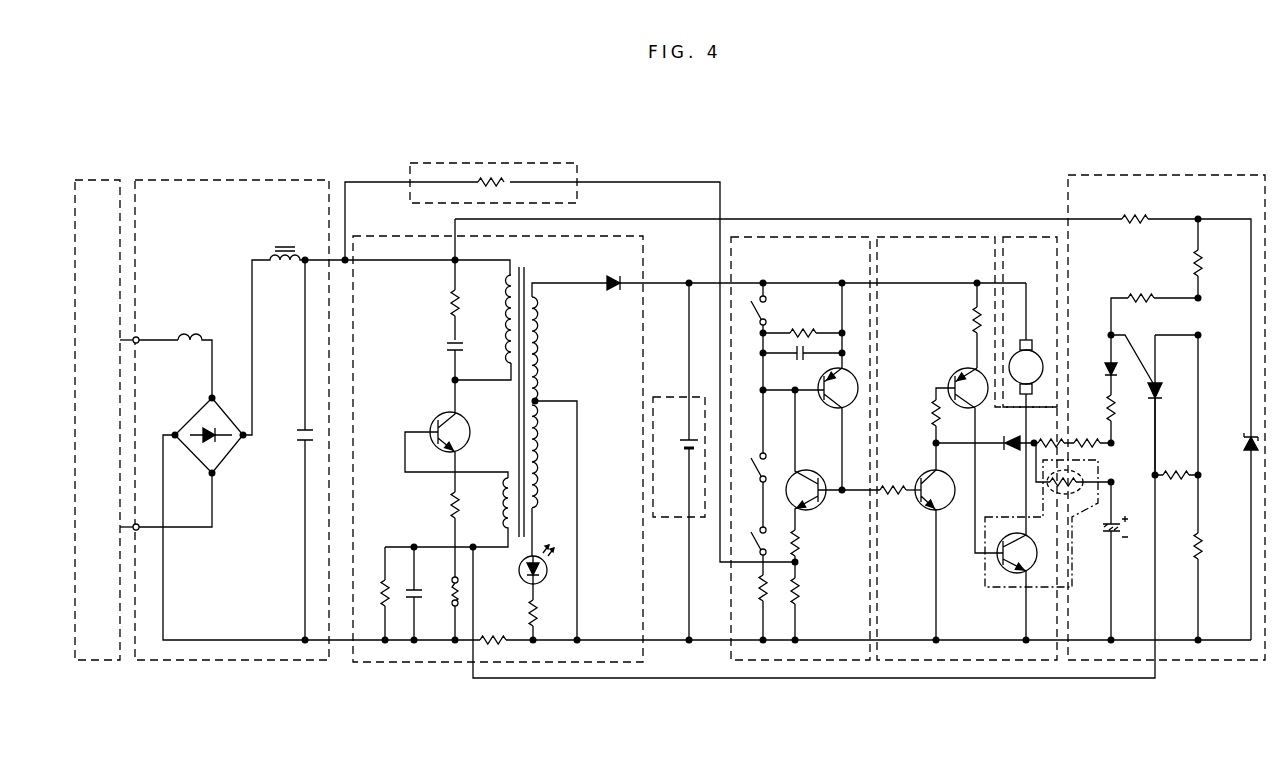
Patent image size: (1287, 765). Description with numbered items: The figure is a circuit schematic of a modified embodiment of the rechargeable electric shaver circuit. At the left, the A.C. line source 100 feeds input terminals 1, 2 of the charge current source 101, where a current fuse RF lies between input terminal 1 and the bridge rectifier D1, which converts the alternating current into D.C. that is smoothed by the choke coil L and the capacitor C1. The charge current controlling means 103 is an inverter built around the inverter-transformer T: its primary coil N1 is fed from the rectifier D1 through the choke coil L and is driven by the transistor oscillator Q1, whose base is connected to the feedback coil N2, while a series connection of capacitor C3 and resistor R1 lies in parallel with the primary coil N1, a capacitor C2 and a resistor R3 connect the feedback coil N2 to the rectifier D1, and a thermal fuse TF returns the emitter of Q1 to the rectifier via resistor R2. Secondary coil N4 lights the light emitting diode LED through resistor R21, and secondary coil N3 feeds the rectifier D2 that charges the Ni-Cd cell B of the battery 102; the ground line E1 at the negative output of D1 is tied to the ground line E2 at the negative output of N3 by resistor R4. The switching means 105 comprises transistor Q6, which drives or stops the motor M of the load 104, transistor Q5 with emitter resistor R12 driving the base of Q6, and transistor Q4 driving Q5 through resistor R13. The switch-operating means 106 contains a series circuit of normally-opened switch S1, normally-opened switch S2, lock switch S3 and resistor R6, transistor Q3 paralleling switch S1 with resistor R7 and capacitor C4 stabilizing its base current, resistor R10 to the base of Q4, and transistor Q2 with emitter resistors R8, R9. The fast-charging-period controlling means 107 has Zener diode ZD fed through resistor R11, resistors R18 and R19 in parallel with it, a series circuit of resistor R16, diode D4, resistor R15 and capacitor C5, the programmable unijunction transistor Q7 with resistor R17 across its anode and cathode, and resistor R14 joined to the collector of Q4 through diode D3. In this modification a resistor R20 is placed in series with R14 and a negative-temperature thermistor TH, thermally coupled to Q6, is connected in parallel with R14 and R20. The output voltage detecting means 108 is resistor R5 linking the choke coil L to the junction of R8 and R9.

The A.C. line source 100 is at (97, 180).
The charge current source 101 is at (216, 180).
The battery 102 is at (672, 520).
The charge current controlling means 103 is at (380, 236).
The motor 104 is at (1015, 237).
The switching means 105 is at (905, 237).
The switch-operating means 106 is at (770, 237).
The fast-charging-period controlling means 107 is at (1140, 175).
The output voltage detecting means 108 is at (455, 163).
The input terminal 1 is at (139, 338).
The input terminal 2 is at (138, 530).
The ground line E1 is at (340, 645).
The ground line E2 is at (663, 645).
The current fuse RF is at (194, 356).
The bridge rectifier D1 is at (198, 436).
The smoothing choke coil L is at (285, 238).
The capacitor C1 is at (294, 450).
The resistor R1 is at (466, 300).
The capacitor C3 is at (468, 360).
The inverter-transformer T is at (517, 391).
The primary coil N1 is at (494, 319).
The feedback coil N2 is at (446, 512).
The secondary coil N3 is at (569, 341).
The secondary coil N4 is at (550, 480).
The transistor oscillator Q1 is at (456, 436).
The resistor R2 is at (439, 534).
The resistor R3 is at (372, 593).
The capacitor C2 is at (406, 593).
The thermal fuse TF is at (442, 608).
The resistor R4 is at (865, 630).
The resistor R5 is at (503, 191).
The light emitting diode LED is at (516, 564).
The resistor R21 is at (550, 612).
The rectifier D2 is at (811, 272).
The Ni-Cd cell B is at (679, 461).
The normally-opened switch S1 is at (771, 368).
The normally-opened switch S2 is at (750, 490).
The lock switch S3 is at (750, 551).
The resistor R7 is at (802, 323).
The capacitor C4 is at (802, 353).
The transistor Q2 is at (833, 460).
The transistor Q3 is at (810, 386).
The resistor R6 is at (775, 604).
The emitter resistor R8 is at (807, 553).
The emitter resistor R9 is at (807, 609).
The resistor R10 is at (899, 502).
The transistor Q4 is at (939, 541).
The transistor Q5 is at (961, 458).
The transistor Q6 is at (1027, 581).
The resistor R12 is at (958, 325).
The resistor R13 is at (953, 421).
The diode D3 is at (985, 436).
The motor M is at (1026, 409).
The thermosensitive resistor TH is at (1072, 481).
The resistor R20 is at (1050, 434).
The resistor R14 is at (1087, 434).
The capacitor C5 is at (1102, 561).
The resistor R11 is at (1137, 209).
The resistor R18 is at (1216, 258).
The resistor R16 is at (1154, 305).
The diode D4 is at (1124, 365).
The programmable unijunction transistor Q7 is at (1154, 405).
The resistor R15 is at (1128, 419).
The resistor R17 is at (1176, 434).
The resistor R19 is at (1216, 586).
The Zener diode ZD is at (1236, 536).